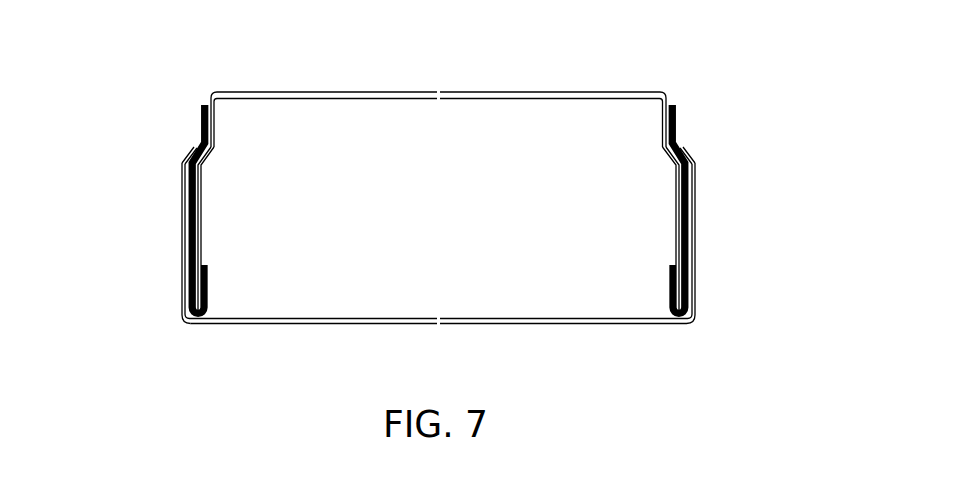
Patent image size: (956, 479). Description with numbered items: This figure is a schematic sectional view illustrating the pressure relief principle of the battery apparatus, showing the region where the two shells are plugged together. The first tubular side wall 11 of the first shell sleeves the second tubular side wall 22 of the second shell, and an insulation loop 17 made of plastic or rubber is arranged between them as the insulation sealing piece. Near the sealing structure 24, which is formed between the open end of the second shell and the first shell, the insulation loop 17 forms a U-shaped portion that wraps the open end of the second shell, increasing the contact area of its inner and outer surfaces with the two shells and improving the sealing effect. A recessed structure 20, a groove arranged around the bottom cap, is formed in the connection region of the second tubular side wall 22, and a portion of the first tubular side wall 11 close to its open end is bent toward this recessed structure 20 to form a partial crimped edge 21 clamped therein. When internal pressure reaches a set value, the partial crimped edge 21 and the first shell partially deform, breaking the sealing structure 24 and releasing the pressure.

The first tubular side wall 11 is at (181, 250).
The insulation loop 17 is at (188, 193).
The recessed structure 20 is at (197, 145).
The partial crimped edge 21 is at (184, 152).
The second tubular side wall 22 is at (200, 287).
The sealing structure 24 is at (187, 319).